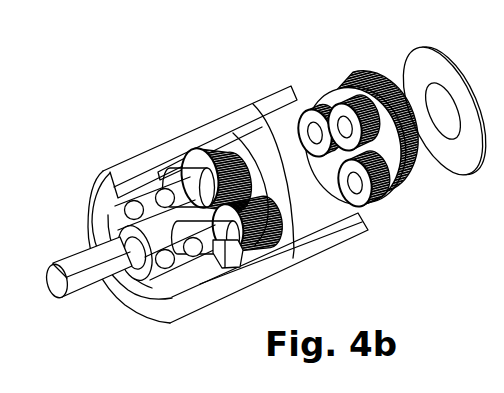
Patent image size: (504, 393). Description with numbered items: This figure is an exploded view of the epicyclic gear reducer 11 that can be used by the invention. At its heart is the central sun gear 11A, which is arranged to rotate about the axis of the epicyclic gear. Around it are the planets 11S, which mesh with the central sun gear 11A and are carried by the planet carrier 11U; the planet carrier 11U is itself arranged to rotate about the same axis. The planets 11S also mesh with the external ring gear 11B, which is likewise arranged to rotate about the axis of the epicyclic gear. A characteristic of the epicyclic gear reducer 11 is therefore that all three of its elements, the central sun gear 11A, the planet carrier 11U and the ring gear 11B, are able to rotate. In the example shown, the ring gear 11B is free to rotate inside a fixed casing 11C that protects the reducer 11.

The epicyclic gear reducer 11 is at (130, 82).
The central sun gear 11A is at (178, 224).
The external ring gear 11B is at (297, 226).
The fixed casing 11C is at (185, 294).
The planets 11S is at (222, 172).
The planet carrier 11U is at (252, 188).